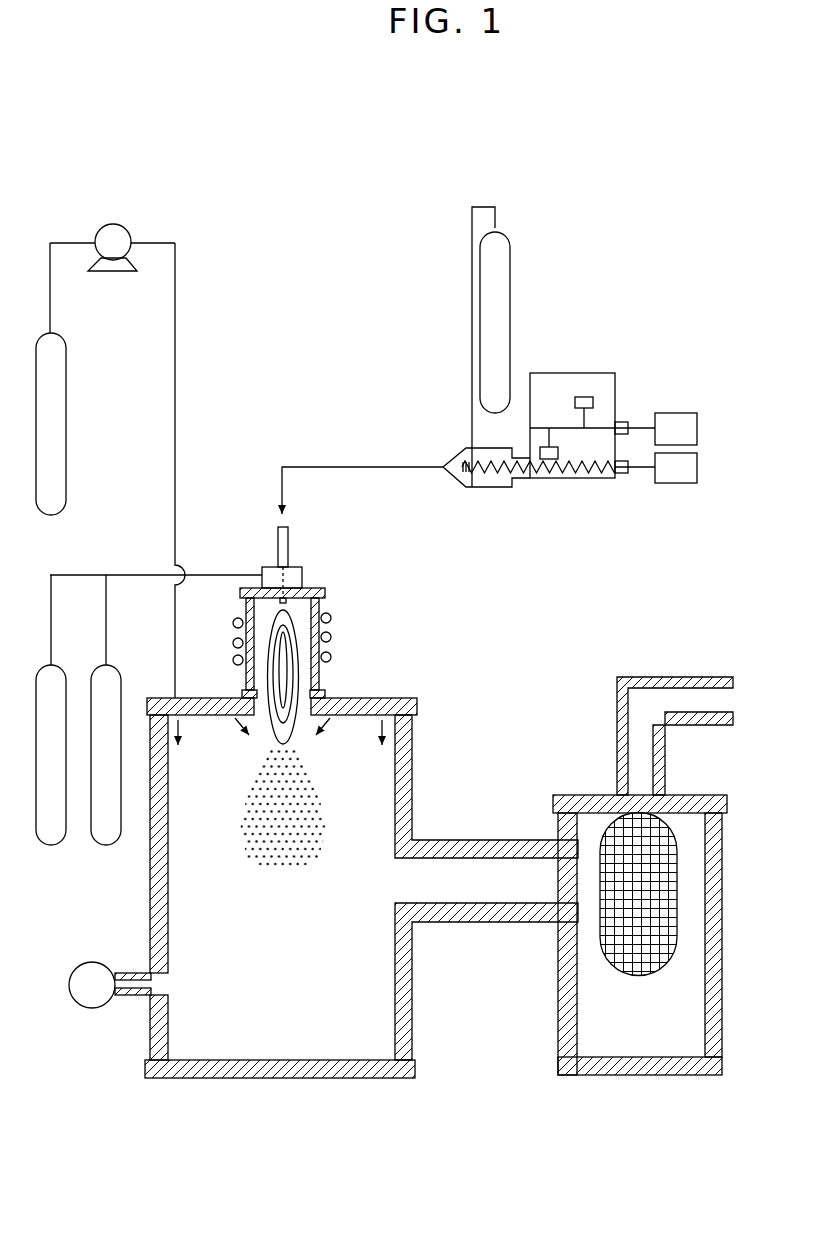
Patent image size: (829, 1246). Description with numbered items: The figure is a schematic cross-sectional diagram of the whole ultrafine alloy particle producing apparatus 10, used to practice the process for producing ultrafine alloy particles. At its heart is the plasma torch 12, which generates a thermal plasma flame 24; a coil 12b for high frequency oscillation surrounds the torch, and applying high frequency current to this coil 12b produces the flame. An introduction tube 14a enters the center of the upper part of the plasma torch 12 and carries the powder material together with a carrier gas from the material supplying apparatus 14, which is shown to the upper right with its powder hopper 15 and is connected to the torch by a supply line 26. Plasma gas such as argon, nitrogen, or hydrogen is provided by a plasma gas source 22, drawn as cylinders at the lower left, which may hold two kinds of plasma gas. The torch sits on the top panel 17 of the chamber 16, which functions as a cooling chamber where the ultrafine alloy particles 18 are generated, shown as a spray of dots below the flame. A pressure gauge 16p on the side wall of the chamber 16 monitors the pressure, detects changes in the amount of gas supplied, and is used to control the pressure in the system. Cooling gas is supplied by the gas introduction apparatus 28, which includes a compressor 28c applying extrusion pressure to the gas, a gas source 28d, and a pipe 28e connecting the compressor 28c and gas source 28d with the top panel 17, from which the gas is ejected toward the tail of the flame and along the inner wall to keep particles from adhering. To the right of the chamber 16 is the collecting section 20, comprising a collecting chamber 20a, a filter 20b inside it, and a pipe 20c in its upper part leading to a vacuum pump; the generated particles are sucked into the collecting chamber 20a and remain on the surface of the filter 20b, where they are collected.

The ultrafine alloy particle producing apparatus 10 is at (652, 136).
The plasma torch 12 is at (360, 582).
The coil for high frequency oscillation 12b is at (335, 636).
The material supplying apparatus 14 is at (632, 358).
The introduction tube 14a is at (290, 549).
The powder hopper 15 is at (500, 314).
The chamber 16 is at (428, 758).
The pressure gauge 16p is at (95, 1010).
The top panel 17 is at (416, 694).
The ultrafine alloy particles 18 is at (252, 813).
The collecting section 20 is at (591, 758).
The collecting chamber 20a is at (597, 1018).
The filter 20b is at (678, 900).
The pipe 20c is at (648, 760).
The plasma gas source 22 is at (80, 778).
The thermal plasma flame 24 is at (280, 680).
The powder supply line 26 is at (365, 466).
The gas introduction apparatus 28 is at (80, 188).
The compressor 28c is at (127, 226).
The gas source 28d is at (51, 518).
The pipe 28e is at (176, 452).